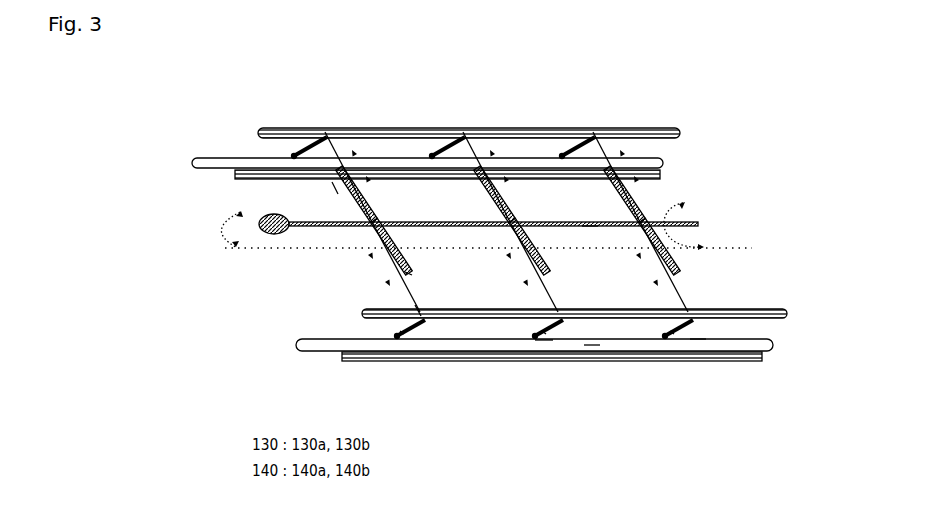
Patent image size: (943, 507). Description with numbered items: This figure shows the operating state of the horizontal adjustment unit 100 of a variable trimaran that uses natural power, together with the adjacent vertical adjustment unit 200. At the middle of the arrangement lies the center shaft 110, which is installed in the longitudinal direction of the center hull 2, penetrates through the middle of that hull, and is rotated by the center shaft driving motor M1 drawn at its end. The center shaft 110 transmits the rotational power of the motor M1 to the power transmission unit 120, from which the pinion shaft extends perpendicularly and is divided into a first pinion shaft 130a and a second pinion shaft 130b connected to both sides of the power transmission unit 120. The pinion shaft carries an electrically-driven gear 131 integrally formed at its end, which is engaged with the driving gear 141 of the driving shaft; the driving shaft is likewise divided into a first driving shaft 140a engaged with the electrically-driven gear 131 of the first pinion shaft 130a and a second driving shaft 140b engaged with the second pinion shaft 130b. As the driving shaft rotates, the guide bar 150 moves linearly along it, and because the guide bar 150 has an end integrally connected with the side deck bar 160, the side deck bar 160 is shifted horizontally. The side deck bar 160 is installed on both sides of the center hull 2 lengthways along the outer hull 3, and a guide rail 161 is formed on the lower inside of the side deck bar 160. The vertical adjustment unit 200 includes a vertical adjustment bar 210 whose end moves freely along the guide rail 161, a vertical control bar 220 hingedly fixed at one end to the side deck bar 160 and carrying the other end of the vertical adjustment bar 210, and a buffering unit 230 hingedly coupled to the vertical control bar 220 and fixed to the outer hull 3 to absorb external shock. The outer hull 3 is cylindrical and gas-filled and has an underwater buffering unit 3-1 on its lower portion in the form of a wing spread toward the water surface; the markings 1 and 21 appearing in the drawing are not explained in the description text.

The fastening pin 1 is at (403, 332).
The center hull 2 is at (755, 250).
The outer hull 3 is at (663, 158).
The underwater buffering unit 3-1 is at (663, 180).
The axis line 21 is at (590, 230).
The horizontal adjustment unit 100 is at (328, 188).
The center shaft 110 is at (333, 228).
The power transmission unit 120 is at (407, 157).
The first pinion shaft 130a is at (513, 200).
The second pinion shaft 130b is at (408, 229).
The electrically-driven gear 131 is at (418, 336).
The first driving shaft 140a is at (480, 176).
The second driving shaft 140b is at (408, 260).
The driving gear 141 is at (423, 276).
The guide bar 150 is at (339, 128).
The side deck bar 160 is at (500, 127).
The guide rail 161 is at (362, 312).
The vertical adjustment unit 200 is at (698, 335).
The vertical adjustment bar 210 is at (545, 341).
The vertical control bar 220 is at (592, 346).
The buffering unit 230 is at (528, 350).
The center shaft driving motor M1 is at (270, 238).